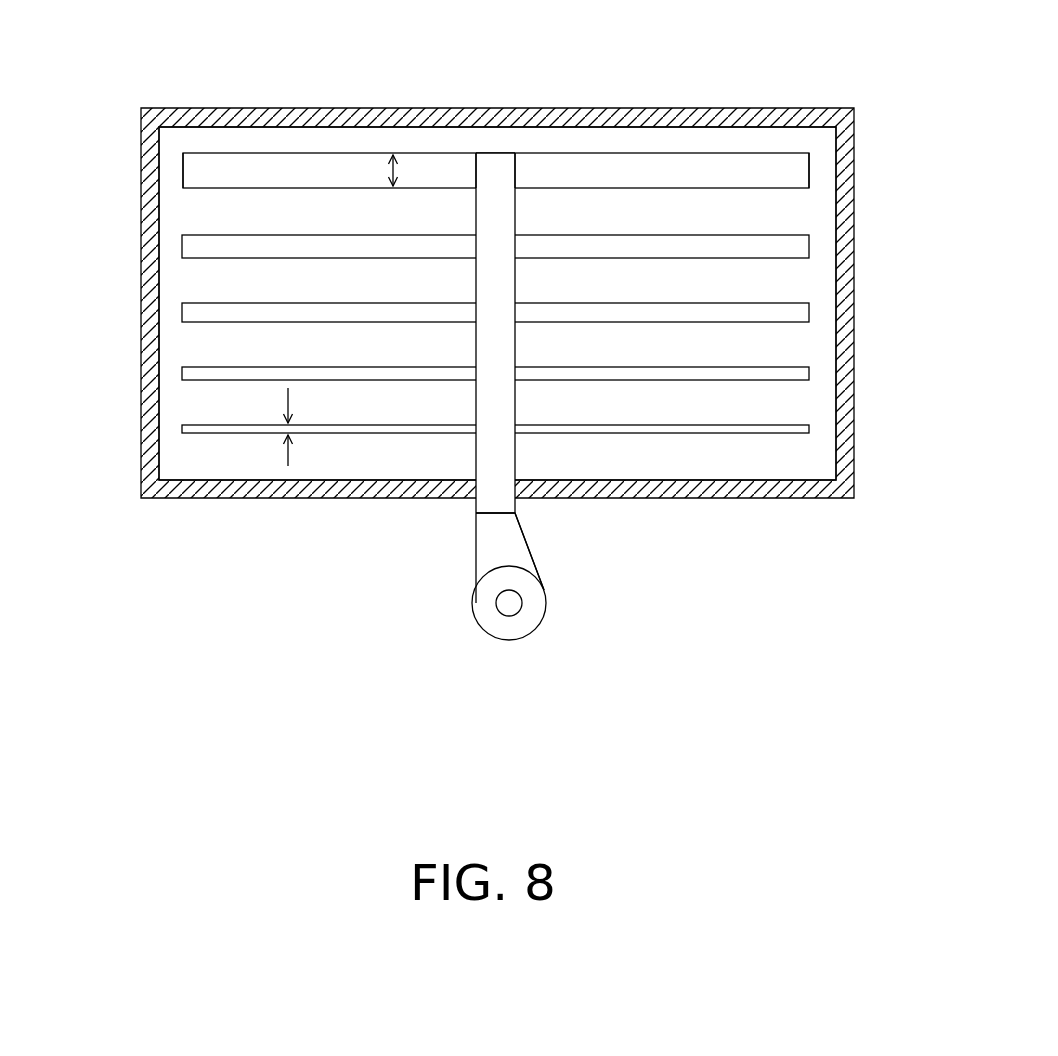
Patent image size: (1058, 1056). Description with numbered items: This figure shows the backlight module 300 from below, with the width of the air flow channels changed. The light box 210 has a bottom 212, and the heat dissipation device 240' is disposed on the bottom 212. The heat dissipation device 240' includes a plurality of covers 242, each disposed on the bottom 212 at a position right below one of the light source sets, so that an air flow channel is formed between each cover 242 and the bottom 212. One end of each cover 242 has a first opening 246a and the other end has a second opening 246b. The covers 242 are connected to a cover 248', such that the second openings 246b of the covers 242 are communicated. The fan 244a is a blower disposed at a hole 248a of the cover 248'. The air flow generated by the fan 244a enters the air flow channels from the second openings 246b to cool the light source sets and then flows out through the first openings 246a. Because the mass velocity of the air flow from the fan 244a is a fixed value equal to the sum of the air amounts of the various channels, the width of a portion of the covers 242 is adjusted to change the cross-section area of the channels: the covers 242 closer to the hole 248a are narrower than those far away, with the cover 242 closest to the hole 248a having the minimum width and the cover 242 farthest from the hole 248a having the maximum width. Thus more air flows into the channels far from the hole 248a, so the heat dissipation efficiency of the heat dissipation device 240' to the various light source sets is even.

The backlight module 300 is at (897, 613).
The light box 210 is at (847, 135).
The bottom 212 is at (820, 148).
The heat dissipation device 240' is at (500, 381).
The covers 242 is at (745, 175).
The first opening 246a is at (181, 171).
The second opening 246b is at (480, 166).
The cover 248' is at (433, 421).
The hole 248a is at (495, 513).
The fan 244a is at (490, 607).